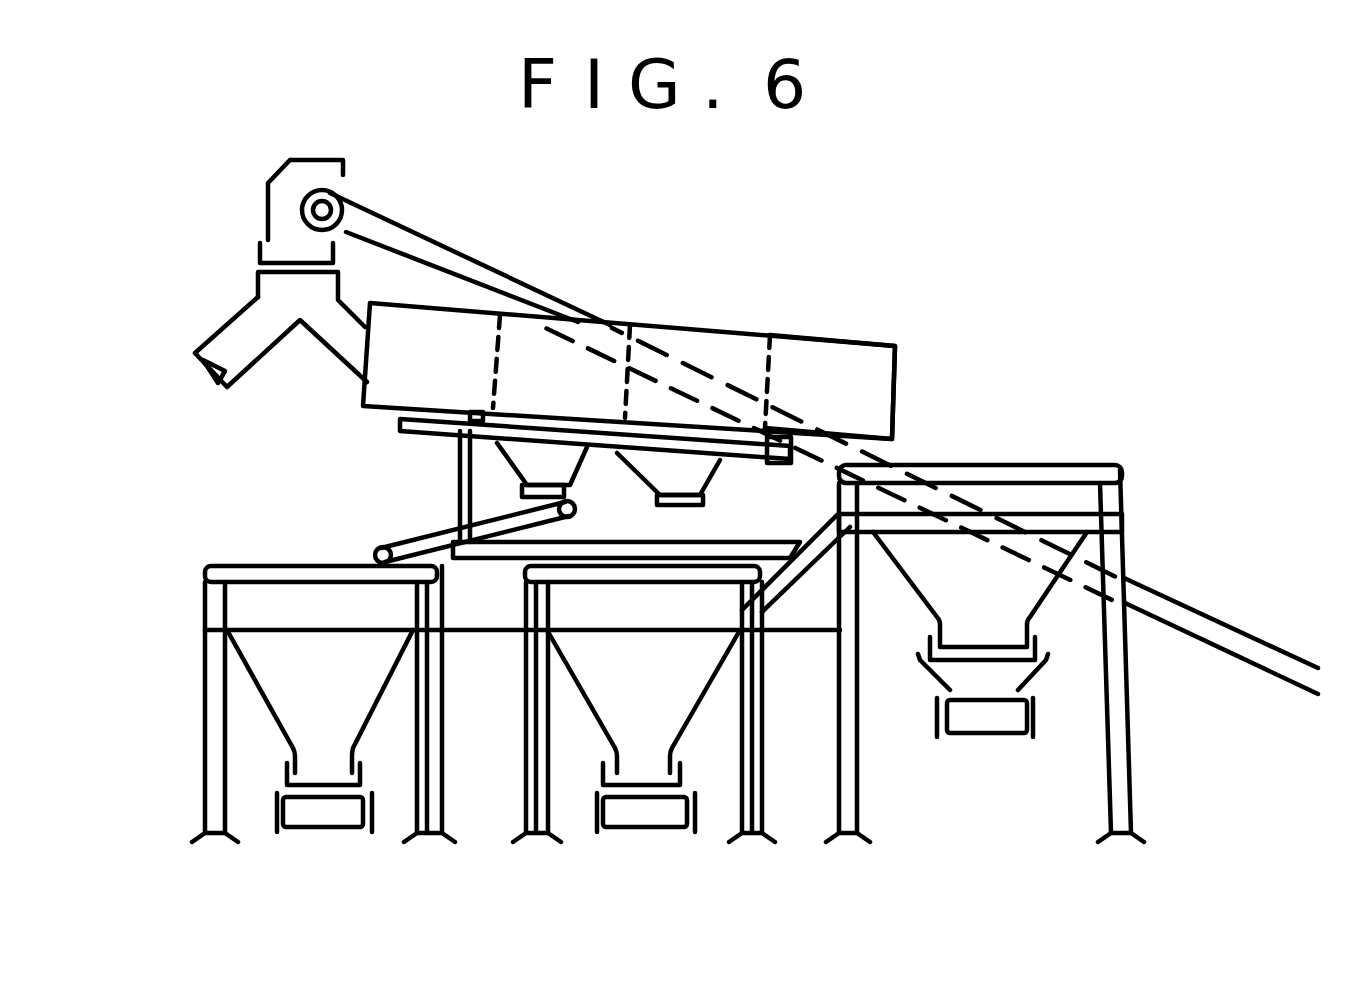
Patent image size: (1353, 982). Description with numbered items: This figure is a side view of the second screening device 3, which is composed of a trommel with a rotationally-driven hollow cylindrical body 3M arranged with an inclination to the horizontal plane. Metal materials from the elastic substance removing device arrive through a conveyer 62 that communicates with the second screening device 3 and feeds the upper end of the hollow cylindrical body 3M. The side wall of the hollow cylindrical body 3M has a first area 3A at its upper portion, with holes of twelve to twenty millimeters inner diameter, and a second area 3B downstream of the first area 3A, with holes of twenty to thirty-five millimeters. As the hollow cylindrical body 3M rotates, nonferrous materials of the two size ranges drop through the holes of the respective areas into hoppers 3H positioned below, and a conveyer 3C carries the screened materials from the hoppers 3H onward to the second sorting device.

The conveyer 62 is at (447, 268).
The second screening device 3 is at (622, 275).
The first area 3A is at (540, 358).
The second area 3B is at (667, 367).
The hollow cylindrical body 3M is at (753, 333).
The hoppers 3H is at (957, 583).
The conveyer 3C is at (350, 813).